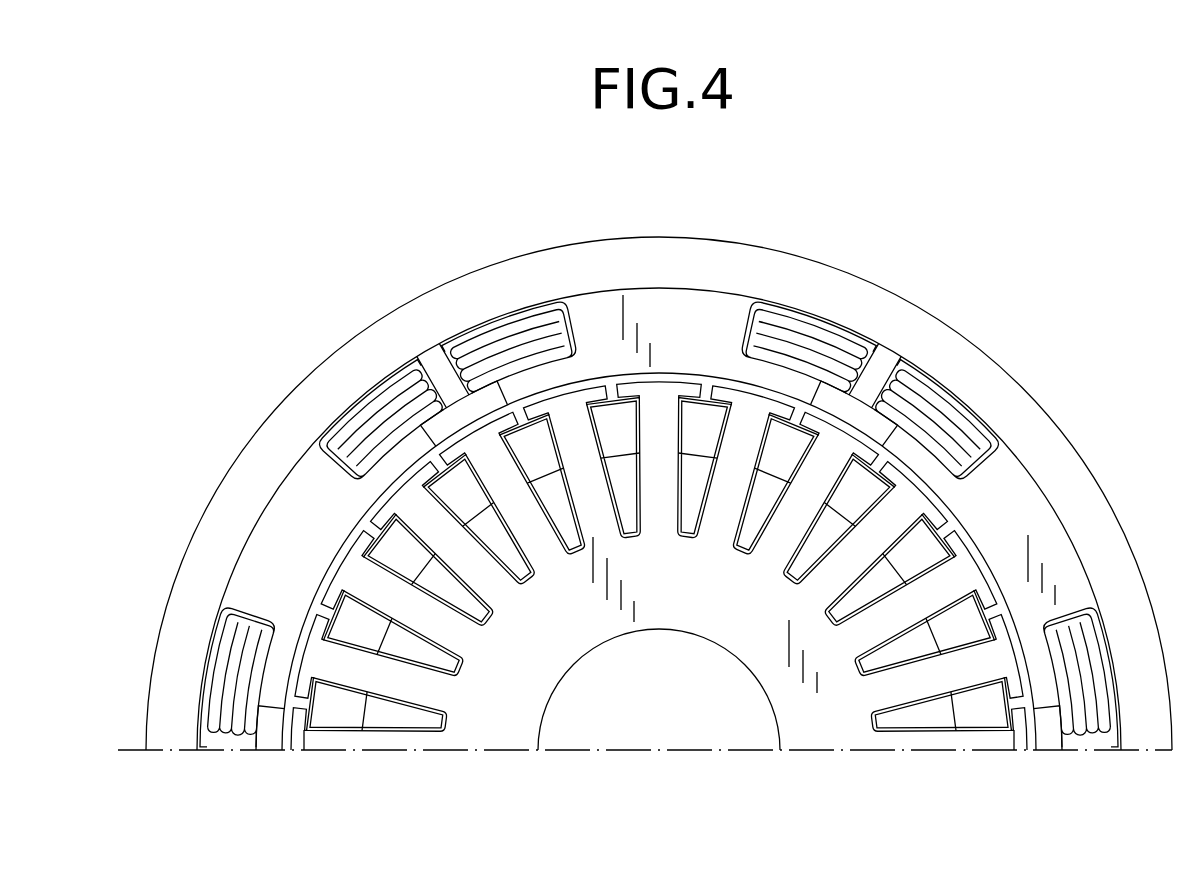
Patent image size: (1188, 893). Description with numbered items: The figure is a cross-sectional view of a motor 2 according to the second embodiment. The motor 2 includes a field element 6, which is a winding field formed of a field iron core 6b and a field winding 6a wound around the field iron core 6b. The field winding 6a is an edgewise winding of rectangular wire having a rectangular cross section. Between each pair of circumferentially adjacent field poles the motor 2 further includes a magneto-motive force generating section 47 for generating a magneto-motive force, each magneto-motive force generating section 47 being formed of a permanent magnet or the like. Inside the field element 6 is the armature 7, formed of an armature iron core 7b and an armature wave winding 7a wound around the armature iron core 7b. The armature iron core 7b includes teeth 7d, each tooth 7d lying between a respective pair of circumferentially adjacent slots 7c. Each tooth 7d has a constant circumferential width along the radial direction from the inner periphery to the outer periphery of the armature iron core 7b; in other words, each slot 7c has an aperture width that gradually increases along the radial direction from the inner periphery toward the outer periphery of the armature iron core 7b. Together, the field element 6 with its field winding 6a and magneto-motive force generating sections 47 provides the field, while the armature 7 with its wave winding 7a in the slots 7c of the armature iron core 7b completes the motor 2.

The motor 2 is at (966, 302).
The field element 6 is at (282, 757).
The field winding 6a is at (508, 336).
The field iron core 6b is at (662, 307).
The magneto-motive force generating section 47 is at (462, 407).
The armature 7 is at (535, 757).
The armature wave winding 7a is at (990, 713).
The armature iron core 7b is at (814, 720).
The slot 7c is at (923, 563).
The tooth 7d is at (888, 522).